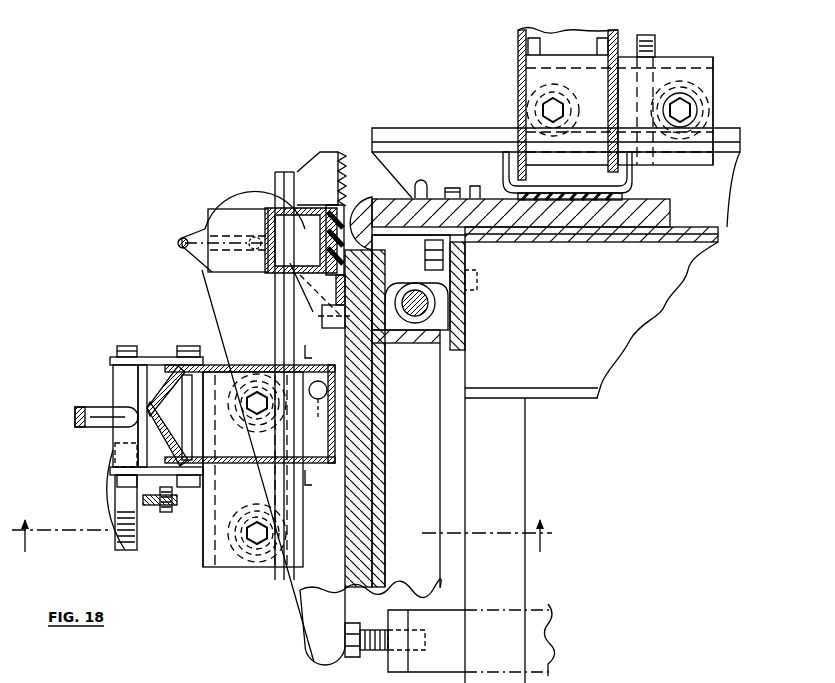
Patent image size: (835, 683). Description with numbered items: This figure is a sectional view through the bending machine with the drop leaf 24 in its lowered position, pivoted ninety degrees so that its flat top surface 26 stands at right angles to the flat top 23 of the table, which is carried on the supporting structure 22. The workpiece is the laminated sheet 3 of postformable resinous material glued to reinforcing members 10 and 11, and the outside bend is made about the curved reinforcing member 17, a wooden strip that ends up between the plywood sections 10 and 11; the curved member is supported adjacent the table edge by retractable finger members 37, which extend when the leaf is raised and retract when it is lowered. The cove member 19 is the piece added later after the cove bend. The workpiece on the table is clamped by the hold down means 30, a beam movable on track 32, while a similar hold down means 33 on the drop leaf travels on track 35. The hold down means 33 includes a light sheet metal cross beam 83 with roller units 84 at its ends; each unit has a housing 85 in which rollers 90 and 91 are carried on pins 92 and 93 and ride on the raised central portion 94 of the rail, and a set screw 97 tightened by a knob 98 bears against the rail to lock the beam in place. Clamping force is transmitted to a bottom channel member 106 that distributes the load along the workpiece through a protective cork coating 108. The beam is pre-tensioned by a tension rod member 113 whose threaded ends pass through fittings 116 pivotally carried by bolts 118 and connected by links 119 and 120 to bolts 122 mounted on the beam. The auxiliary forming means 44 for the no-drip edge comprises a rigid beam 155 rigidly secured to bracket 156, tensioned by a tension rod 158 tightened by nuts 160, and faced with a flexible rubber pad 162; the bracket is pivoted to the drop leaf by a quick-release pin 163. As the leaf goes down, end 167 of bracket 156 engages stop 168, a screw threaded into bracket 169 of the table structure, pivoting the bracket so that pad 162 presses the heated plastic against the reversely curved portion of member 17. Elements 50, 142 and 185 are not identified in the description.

The laminated sheet 3 is at (400, 200).
The reinforcing member 10 is at (546, 218).
The reinforcing member 11 is at (365, 422).
The curved reinforcing member 17 is at (416, 222).
The cove member 19 is at (15, 513).
The supporting structure 22 is at (512, 558).
The flat top 23 is at (680, 226).
The drop leaf 24 is at (430, 370).
The flat top surface 26 is at (338, 292).
The hold down means 30 is at (512, 45).
The track 32 is at (455, 128).
The hold down means 33 is at (95, 470).
The track 35 is at (284, 192).
The finger member 37 is at (446, 254).
The auxiliary forming means 44 is at (190, 198).
The spring 50 is at (342, 160).
The cross beam 83 is at (612, 46).
The roller unit 84 is at (698, 52).
The housing 85 is at (715, 82).
The roller 90 is at (542, 82).
The roller 91 is at (712, 105).
The pin 92 is at (548, 108).
The pin 93 is at (690, 110).
The raised central portion 94 is at (276, 190).
The set screw 97 is at (650, 44).
The knob 98 is at (118, 522).
The channel member 106 is at (628, 186).
The protective coating 108 is at (520, 196).
The tension rod member 113 is at (96, 427).
The fitting 116 is at (128, 400).
The bolt 118 is at (126, 345).
The link 119 is at (160, 505).
The link 120 is at (162, 358).
The bolt 122 is at (190, 345).
The bearing 142 is at (432, 304).
The rigid beam 155 is at (298, 212).
The bracket 156 is at (315, 594).
The tension rod 158 is at (180, 240).
The nut 160 is at (252, 240).
The flexible rubber pad 162 is at (302, 240).
The pin 163 is at (318, 410).
The end of bracket 167 is at (326, 648).
The stop 168 is at (368, 652).
The bracket 169 is at (456, 614).
The block 185 is at (330, 168).